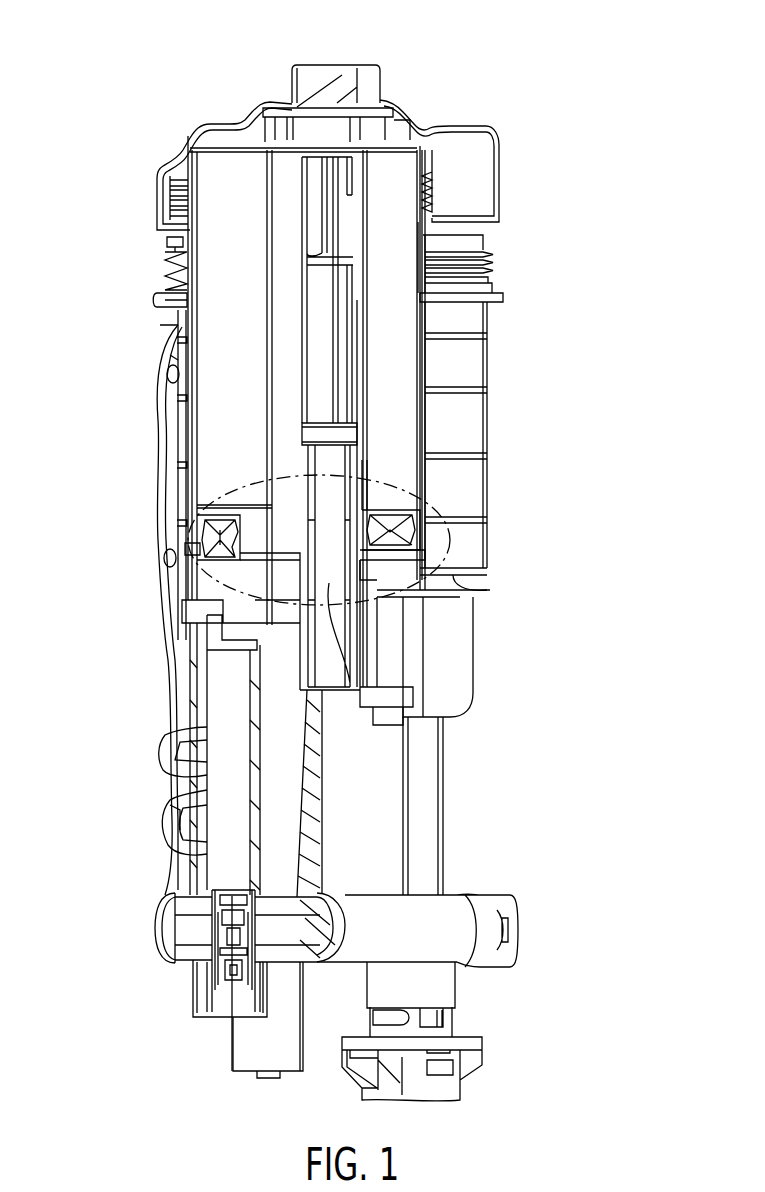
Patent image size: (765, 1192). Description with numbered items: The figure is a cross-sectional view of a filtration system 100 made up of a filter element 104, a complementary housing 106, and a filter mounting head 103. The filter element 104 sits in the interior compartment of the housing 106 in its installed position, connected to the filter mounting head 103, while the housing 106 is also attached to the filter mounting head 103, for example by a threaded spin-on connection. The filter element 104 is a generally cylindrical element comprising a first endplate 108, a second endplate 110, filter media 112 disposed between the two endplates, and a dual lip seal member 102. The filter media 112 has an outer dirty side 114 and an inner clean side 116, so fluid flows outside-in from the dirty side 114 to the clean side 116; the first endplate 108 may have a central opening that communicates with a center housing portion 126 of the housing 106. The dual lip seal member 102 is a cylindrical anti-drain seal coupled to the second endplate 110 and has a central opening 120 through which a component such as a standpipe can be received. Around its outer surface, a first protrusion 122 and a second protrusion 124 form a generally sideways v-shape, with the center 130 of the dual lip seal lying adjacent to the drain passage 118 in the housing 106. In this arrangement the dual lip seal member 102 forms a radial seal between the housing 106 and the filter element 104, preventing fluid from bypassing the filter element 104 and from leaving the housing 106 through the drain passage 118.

The filtration system 100 is at (335, 600).
The dual lip seal member 102 is at (173, 502).
The filter mounting head 103 is at (344, 78).
The filter element 104 is at (152, 318).
The housing 106 is at (458, 382).
The first endplate 108 is at (418, 147).
The second endplate 110 is at (345, 465).
The filter media 112 is at (410, 323).
The outer dirty side 114 is at (177, 372).
The inner clean side 116 is at (360, 452).
The drain passage 118 is at (207, 547).
The central opening 120 is at (247, 553).
The first protrusion 122 is at (400, 537).
The second protrusion 124 is at (405, 540).
The center housing portion 126 is at (318, 472).
The center of the dual lip seal 130 is at (220, 540).